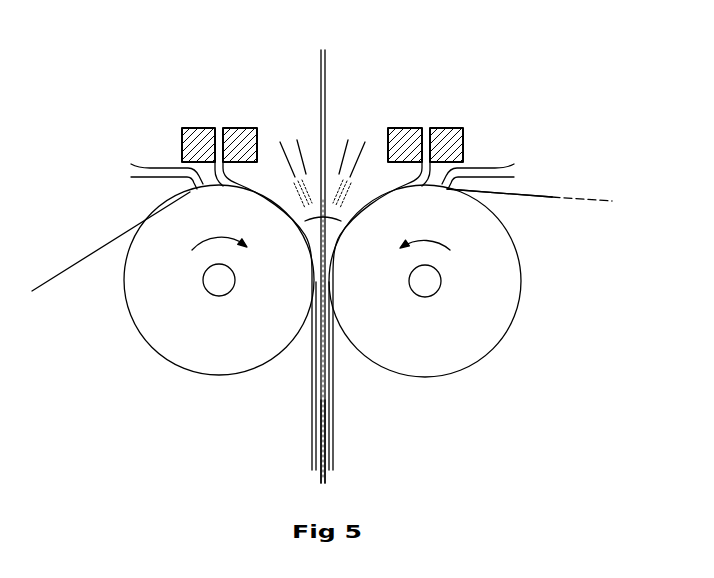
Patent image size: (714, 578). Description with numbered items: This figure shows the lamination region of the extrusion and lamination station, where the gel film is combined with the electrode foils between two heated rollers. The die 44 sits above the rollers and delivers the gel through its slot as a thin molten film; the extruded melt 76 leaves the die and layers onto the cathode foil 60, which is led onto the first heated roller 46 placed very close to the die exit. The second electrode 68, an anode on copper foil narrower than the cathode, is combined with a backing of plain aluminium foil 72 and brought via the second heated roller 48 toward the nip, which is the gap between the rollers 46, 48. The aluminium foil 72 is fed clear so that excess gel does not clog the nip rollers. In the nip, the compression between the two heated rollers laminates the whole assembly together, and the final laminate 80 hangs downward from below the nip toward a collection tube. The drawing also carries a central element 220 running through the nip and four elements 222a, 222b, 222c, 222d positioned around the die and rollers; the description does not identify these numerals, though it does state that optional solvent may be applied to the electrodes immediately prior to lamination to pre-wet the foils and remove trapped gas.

The web 220 is at (325, 98).
The first heated lamination roller 46 is at (142, 302).
The second heated lamination roller 48 is at (498, 305).
The extruded melt 76 is at (261, 197).
The die 44 is at (197, 128).
The first nozzle 222a is at (148, 164).
The second nozzle 222b is at (299, 138).
The third nozzle 222c is at (347, 138).
The fourth nozzle 222d is at (497, 164).
The cathode foil 60 is at (104, 246).
The second electrode 68 is at (541, 197).
The aluminium foil 72 is at (499, 193).
The final laminate 80 is at (327, 412).